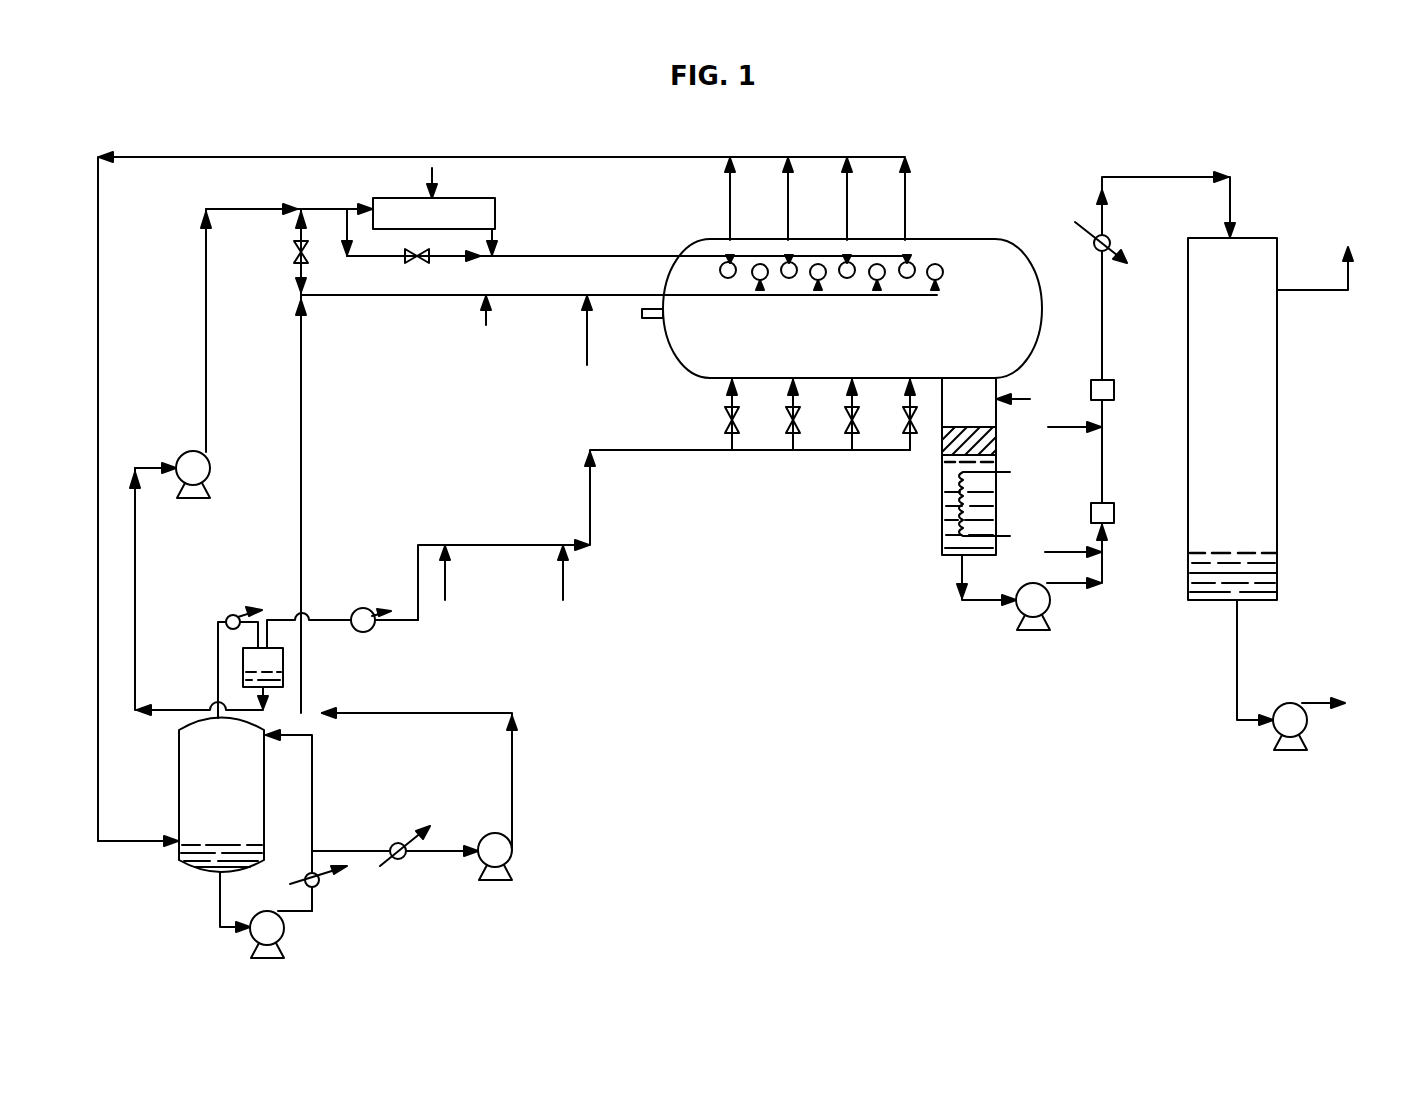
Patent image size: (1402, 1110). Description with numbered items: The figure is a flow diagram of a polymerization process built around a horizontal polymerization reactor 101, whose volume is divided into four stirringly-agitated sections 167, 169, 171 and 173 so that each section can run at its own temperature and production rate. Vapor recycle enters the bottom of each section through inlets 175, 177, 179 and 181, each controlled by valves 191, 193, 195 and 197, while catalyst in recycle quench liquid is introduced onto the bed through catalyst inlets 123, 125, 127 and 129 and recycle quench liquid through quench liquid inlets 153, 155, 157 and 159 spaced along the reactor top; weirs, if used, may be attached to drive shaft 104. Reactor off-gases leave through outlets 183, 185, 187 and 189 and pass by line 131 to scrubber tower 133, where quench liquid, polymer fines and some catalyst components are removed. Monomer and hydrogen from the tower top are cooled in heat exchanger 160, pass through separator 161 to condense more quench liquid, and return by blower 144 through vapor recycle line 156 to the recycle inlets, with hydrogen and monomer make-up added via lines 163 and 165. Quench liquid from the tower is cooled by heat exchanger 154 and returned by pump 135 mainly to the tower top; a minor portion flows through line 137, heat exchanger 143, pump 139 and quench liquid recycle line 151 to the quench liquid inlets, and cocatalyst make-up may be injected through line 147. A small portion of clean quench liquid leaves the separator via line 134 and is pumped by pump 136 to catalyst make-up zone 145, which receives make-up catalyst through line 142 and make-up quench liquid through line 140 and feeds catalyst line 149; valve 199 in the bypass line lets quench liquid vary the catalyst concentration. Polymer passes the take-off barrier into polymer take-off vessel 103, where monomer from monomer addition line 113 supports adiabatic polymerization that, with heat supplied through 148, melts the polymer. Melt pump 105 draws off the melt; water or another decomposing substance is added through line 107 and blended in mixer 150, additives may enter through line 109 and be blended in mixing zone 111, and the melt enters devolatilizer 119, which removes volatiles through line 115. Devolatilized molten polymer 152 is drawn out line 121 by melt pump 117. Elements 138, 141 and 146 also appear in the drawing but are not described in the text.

The horizontal polymerization reactor 101 is at (771, 380).
The polymer take-off vessel 103 is at (940, 518).
The drive shaft 104 is at (655, 320).
The melt pump 105 is at (1015, 608).
The line 107 is at (1062, 552).
The line 109 is at (1060, 427).
The mixing zone 111 is at (1115, 392).
The monomer addition line 113 is at (1027, 398).
The line 115 is at (1305, 292).
The melt pump 117 is at (1305, 725).
The devolatilizer 119 is at (1188, 430).
The line 121 is at (1237, 662).
The catalyst inlet 123 is at (733, 262).
The catalyst inlet 125 is at (793, 262).
The catalyst inlet 127 is at (851, 262).
The catalyst inlet 129 is at (913, 264).
The line 131 is at (558, 157).
The scrubber tower 133 is at (178, 778).
The line 134 is at (135, 548).
The pump 135 is at (287, 926).
The pump 136 is at (178, 458).
The line 137 is at (360, 828).
The return line 138 is at (312, 780).
The pump 139 is at (480, 835).
The line 140 is at (490, 323).
The valve 141 is at (293, 254).
The line 142 is at (434, 172).
The heat exchanger 143 is at (400, 862).
The blower 144 is at (375, 628).
The catalyst make-up zone 145 is at (495, 212).
The flow controller 146 is at (1110, 238).
The line 147 is at (587, 352).
The external heating means 148 is at (1005, 470).
The catalyst line 149 is at (588, 232).
The mixer 150 is at (1115, 513).
The quench liquid recycle line 151 is at (393, 297).
The devolatilized molten polymer 152 is at (1278, 572).
The quench liquid inlet 153 is at (752, 278).
The heat exchanger 154 is at (322, 882).
The quench liquid inlet 155 is at (810, 278).
The vapor recycle line 156 is at (643, 452).
The quench liquid inlet 157 is at (869, 278).
The quench liquid inlet 159 is at (927, 278).
The heat exchanger 160 is at (238, 614).
The separator 161 is at (283, 677).
The line 163 is at (453, 587).
The line 165 is at (566, 587).
The stirringly-agitated section 167 is at (748, 354).
The stirringly-agitated section 169 is at (818, 354).
The stirringly-agitated section 171 is at (862, 354).
The stirringly-agitated section 173 is at (912, 354).
The vapor recycle inlet 175 is at (727, 388).
The vapor recycle inlet 177 is at (797, 386).
The vapor recycle inlet 179 is at (856, 386).
The vapor recycle inlet 181 is at (902, 400).
The off-gas outlet 183 is at (900, 240).
The off-gas outlet 185 is at (843, 240).
The off-gas outlet 187 is at (786, 240).
The off-gas outlet 189 is at (725, 243).
The valve 191 is at (725, 442).
The valve 193 is at (800, 430).
The valve 195 is at (846, 435).
The valve 197 is at (915, 430).
The valve 199 is at (425, 262).